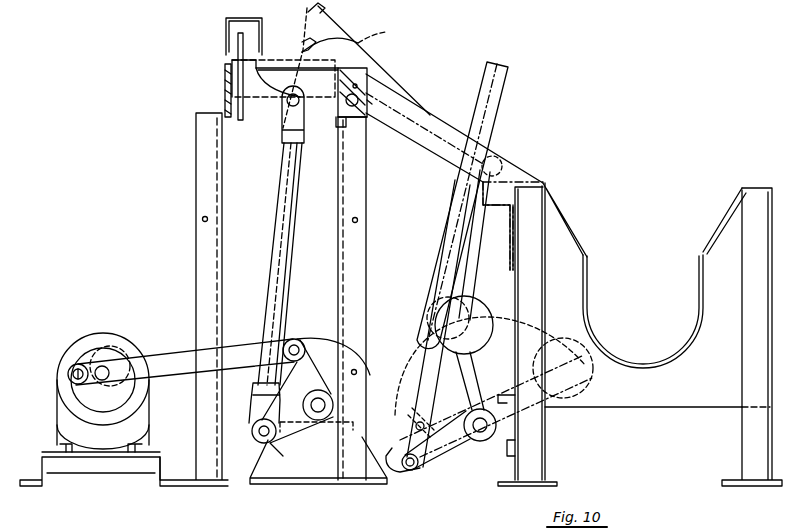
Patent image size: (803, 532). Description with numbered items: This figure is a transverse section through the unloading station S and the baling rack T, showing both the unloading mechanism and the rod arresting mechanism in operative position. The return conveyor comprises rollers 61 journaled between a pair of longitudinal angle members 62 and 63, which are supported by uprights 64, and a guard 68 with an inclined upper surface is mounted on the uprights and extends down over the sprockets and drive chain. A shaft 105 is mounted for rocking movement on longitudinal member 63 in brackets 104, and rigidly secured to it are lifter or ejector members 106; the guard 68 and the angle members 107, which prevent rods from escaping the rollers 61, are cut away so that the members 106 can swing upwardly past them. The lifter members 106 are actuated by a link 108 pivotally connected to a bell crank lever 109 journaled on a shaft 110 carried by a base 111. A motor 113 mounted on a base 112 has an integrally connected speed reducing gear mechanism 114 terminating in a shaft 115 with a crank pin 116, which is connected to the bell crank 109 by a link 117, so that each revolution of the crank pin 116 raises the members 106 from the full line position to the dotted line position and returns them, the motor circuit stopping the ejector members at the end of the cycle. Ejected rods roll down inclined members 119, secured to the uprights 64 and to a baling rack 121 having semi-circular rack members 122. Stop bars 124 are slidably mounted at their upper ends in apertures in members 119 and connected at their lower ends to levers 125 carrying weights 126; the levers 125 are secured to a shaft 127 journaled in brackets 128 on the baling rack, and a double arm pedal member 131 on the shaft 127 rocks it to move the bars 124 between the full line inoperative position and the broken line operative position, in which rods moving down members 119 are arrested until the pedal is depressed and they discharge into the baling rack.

The roller 61 is at (272, 60).
The longitudinal angle member 62 is at (225, 87).
The longitudinal angle member 63 is at (358, 73).
The upright 64 is at (357, 284).
The guard 68 is at (225, 23).
The bracket 104 is at (337, 120).
The shaft 105 is at (358, 98).
The lifter member 106 is at (285, 96).
The angle member 107 is at (330, 40).
The link 108 is at (280, 230).
The bell crank lever 109 is at (308, 362).
The shaft 110 is at (327, 405).
The base 111 is at (310, 475).
The base 112 is at (118, 468).
The motor 113 is at (70, 413).
The speed reducing gear mechanism 114 is at (97, 343).
The shaft 115 is at (103, 370).
The crank pin 116 is at (66, 373).
The link 117 is at (180, 370).
The inclined member 119 is at (432, 117).
The baling rack 121 is at (672, 402).
The semi-circular rack member 122 is at (632, 368).
The stop bar 124 is at (490, 113).
The lever 125 is at (452, 452).
The weight 126 is at (478, 345).
The shaft 127 is at (477, 440).
The bracket 128 is at (507, 438).
The double arm pedal member 131 is at (400, 480).
The unloading station S is at (528, 139).
The baling rack T is at (606, 247).